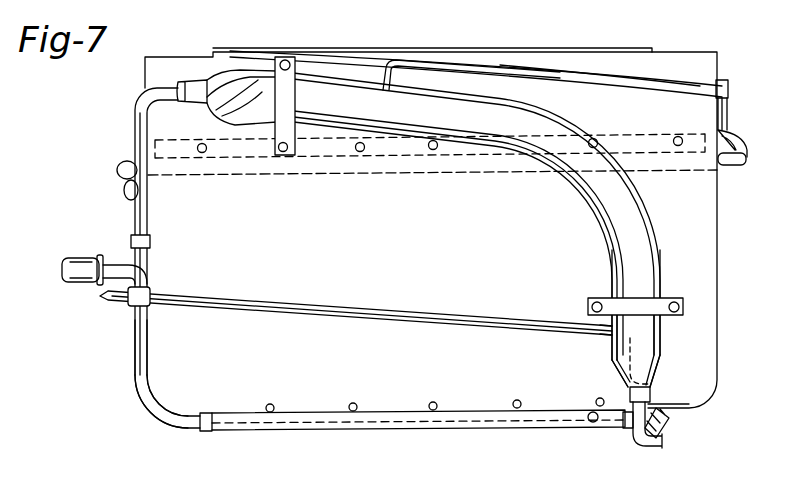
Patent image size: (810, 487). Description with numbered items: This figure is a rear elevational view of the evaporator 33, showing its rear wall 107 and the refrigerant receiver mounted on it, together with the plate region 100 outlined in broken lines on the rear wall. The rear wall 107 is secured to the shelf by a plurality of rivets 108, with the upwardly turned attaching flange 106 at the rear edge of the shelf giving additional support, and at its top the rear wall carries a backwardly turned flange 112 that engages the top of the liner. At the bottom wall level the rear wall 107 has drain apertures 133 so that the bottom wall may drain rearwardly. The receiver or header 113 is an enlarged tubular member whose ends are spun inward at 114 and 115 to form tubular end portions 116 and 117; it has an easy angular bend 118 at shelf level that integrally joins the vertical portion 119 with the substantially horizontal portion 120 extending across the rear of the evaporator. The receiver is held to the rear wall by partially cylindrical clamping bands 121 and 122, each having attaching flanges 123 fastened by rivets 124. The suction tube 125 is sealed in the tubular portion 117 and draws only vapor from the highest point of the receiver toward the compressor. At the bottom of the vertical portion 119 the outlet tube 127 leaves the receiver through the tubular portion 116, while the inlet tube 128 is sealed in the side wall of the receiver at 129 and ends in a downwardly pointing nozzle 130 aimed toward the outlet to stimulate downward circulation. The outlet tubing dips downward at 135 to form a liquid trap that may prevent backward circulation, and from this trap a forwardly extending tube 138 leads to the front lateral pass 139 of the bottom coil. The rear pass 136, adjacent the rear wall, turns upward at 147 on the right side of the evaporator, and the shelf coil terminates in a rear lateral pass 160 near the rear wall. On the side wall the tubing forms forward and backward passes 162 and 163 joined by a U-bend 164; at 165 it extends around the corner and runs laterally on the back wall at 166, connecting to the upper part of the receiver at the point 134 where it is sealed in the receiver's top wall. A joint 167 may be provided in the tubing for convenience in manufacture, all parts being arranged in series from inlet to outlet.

The evaporator 33 is at (150, 345).
The mounting plate 100 is at (654, 134).
The attaching flange 106 is at (428, 145).
The rear wall 107 is at (712, 208).
The rivets 108 is at (676, 138).
The backwardly turned flange 112 is at (630, 49).
The receiver or header 113 is at (658, 261).
The spun-in end 114 is at (654, 374).
The spun-in end 115 is at (203, 78).
The tubular end portion 116 is at (650, 395).
The tubular end portion 117 is at (183, 85).
The angular bend 118 is at (598, 204).
The vertical portion 119 is at (661, 340).
The horizontal portion 120 is at (329, 88).
The clamping band 121 is at (276, 100).
The clamping band 122 is at (657, 316).
The attaching flanges 123 is at (276, 66).
The rivets 124 is at (292, 65).
The suction tube 125 is at (135, 108).
The outlet tube 127 is at (690, 406).
The inlet tube 128 is at (392, 300).
The inlet tube seal point 129 is at (606, 333).
The nozzle 130 is at (626, 372).
The drain apertures 133 is at (350, 407).
The tubing connection point 134 is at (392, 78).
The liquid trap 135 is at (657, 443).
The rear pass 136 is at (190, 429).
The forwardly extending tube 138 is at (668, 420).
The front lateral pass 139 is at (633, 430).
The upward turn 147 is at (145, 407).
The rear lateral pass 160 is at (727, 166).
The side wall pass 162 is at (735, 135).
The side wall pass 163 is at (728, 90).
The U-bend 164 is at (727, 108).
The corner bend 165 is at (706, 82).
The lateral back wall run 166 is at (616, 66).
The tubing joint 167 is at (123, 188).